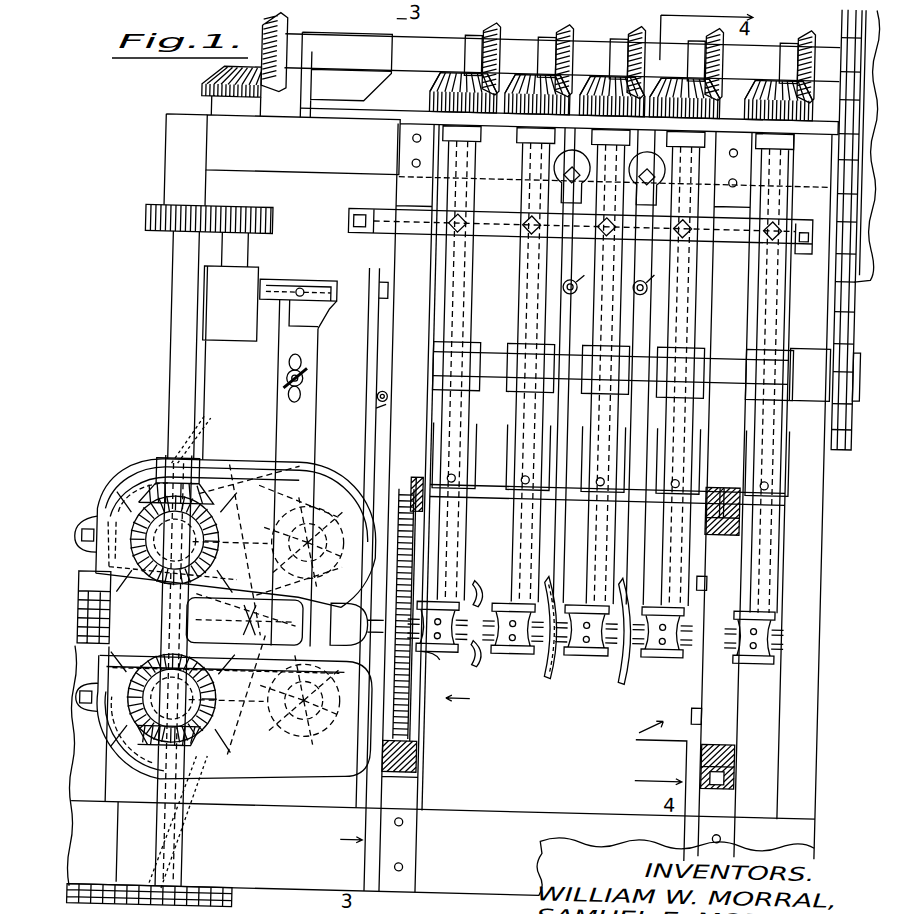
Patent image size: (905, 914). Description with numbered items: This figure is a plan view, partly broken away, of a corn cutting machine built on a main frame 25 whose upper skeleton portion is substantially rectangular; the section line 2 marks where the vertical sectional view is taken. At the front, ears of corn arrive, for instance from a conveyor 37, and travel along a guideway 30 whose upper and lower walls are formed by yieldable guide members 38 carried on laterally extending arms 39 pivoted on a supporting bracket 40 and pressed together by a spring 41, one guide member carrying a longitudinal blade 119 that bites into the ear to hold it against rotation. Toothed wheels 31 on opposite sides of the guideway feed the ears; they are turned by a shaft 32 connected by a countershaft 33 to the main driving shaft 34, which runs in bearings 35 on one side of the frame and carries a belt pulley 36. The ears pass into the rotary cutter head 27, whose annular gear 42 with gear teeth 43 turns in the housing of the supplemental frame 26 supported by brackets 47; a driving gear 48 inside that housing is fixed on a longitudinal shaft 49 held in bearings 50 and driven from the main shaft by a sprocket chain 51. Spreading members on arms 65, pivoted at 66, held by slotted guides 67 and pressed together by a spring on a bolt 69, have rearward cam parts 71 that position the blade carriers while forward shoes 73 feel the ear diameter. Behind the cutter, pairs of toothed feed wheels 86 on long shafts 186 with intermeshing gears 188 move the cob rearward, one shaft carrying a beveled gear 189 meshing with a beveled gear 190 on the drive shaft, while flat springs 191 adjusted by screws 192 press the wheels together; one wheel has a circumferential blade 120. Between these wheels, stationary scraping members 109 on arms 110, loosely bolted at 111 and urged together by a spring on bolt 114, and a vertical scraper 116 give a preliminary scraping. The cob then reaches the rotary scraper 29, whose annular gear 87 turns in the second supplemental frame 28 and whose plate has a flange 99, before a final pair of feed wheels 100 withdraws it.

The section line 2— 2 is at (126, 610).
The main frame 25 is at (442, 852).
The supplemental frame 26 is at (426, 760).
The rotary cutter head 27 is at (469, 697).
The second supplemental frame 28 is at (742, 774).
The rotary scraper 29 is at (648, 735).
The guideway 30 is at (122, 612).
The toothed wheels 31 is at (262, 486).
The shaft 32 is at (182, 352).
The countershaft 33 is at (234, 268).
The main driving shaft 34 is at (672, 62).
The bearings 35 is at (356, 46).
The belt pulley 36 is at (850, 270).
The conveyor 37 is at (138, 590).
The guide members 38 is at (244, 619).
The arms 39 is at (292, 444).
The supporting bracket 40 is at (300, 284).
The spring 41 is at (306, 380).
The annular gear 42 is at (418, 730).
The gear teeth 43 is at (412, 718).
The brackets 47 is at (405, 850).
The driving gear 48 is at (412, 478).
The longitudinal shaft 49 is at (488, 360).
The bearings 50 is at (474, 392).
The sprocket chain 51 is at (840, 340).
The arms 65 is at (376, 446).
The pivotal mounting 66 is at (375, 292).
The slotted guides 67 is at (376, 398).
The bolt 69 is at (364, 410).
The rearwardly extending part 71 is at (431, 665).
The shoe 73 is at (354, 624).
The toothed feed wheels 86 is at (458, 652).
The annular gear 87 is at (742, 742).
The flange 99 is at (728, 698).
The feed wheels 100 is at (762, 660).
The scraping members 109 is at (556, 676).
The arms 110 is at (632, 568).
The bolt 111 is at (640, 168).
The bolt 114 is at (630, 288).
The vertical scraper 116 is at (484, 588).
The longitudinal blade 119 is at (258, 626).
The circumferential blade 120 is at (668, 654).
The shafts 186 is at (595, 150).
The intermeshing gears 188 is at (612, 112).
The beveled gear 189 is at (531, 70).
The beveled gear 190 is at (800, 42).
The flat springs 191 is at (520, 280).
The adjusting screws 192 is at (528, 216).